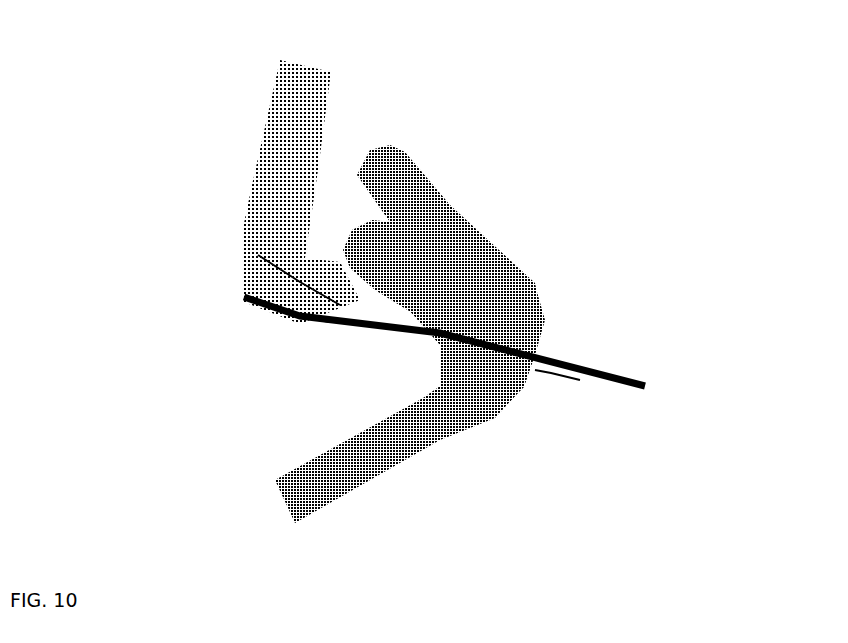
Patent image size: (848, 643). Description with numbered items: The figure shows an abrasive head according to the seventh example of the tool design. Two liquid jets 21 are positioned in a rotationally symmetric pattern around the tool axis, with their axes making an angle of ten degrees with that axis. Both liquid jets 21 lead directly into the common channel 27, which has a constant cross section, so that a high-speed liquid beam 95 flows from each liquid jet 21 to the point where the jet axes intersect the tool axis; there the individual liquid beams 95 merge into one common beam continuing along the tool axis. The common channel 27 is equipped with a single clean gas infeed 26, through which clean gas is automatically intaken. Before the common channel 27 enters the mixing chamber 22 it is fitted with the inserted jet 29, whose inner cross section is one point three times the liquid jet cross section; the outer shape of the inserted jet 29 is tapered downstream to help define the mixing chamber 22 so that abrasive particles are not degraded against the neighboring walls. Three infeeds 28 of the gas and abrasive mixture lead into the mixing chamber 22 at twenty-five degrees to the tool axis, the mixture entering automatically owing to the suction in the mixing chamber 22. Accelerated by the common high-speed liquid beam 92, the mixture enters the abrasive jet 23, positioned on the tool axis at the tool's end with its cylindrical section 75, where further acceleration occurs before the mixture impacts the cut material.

The liquid jet 21 is at (215, 245).
The mixing chamber 22 is at (545, 281).
The abrasive jet 23 is at (609, 435).
The clean gas infeed 26 is at (241, 151).
The common channel 27 is at (253, 374).
The infeeds of gas and abrasive mixture 28 is at (337, 285).
The inserted jet 29 is at (371, 363).
The abrasive jet cylindrical section 75 is at (512, 300).
The common liquid beam 92 is at (529, 442).
The liquid beam 95 is at (237, 231).